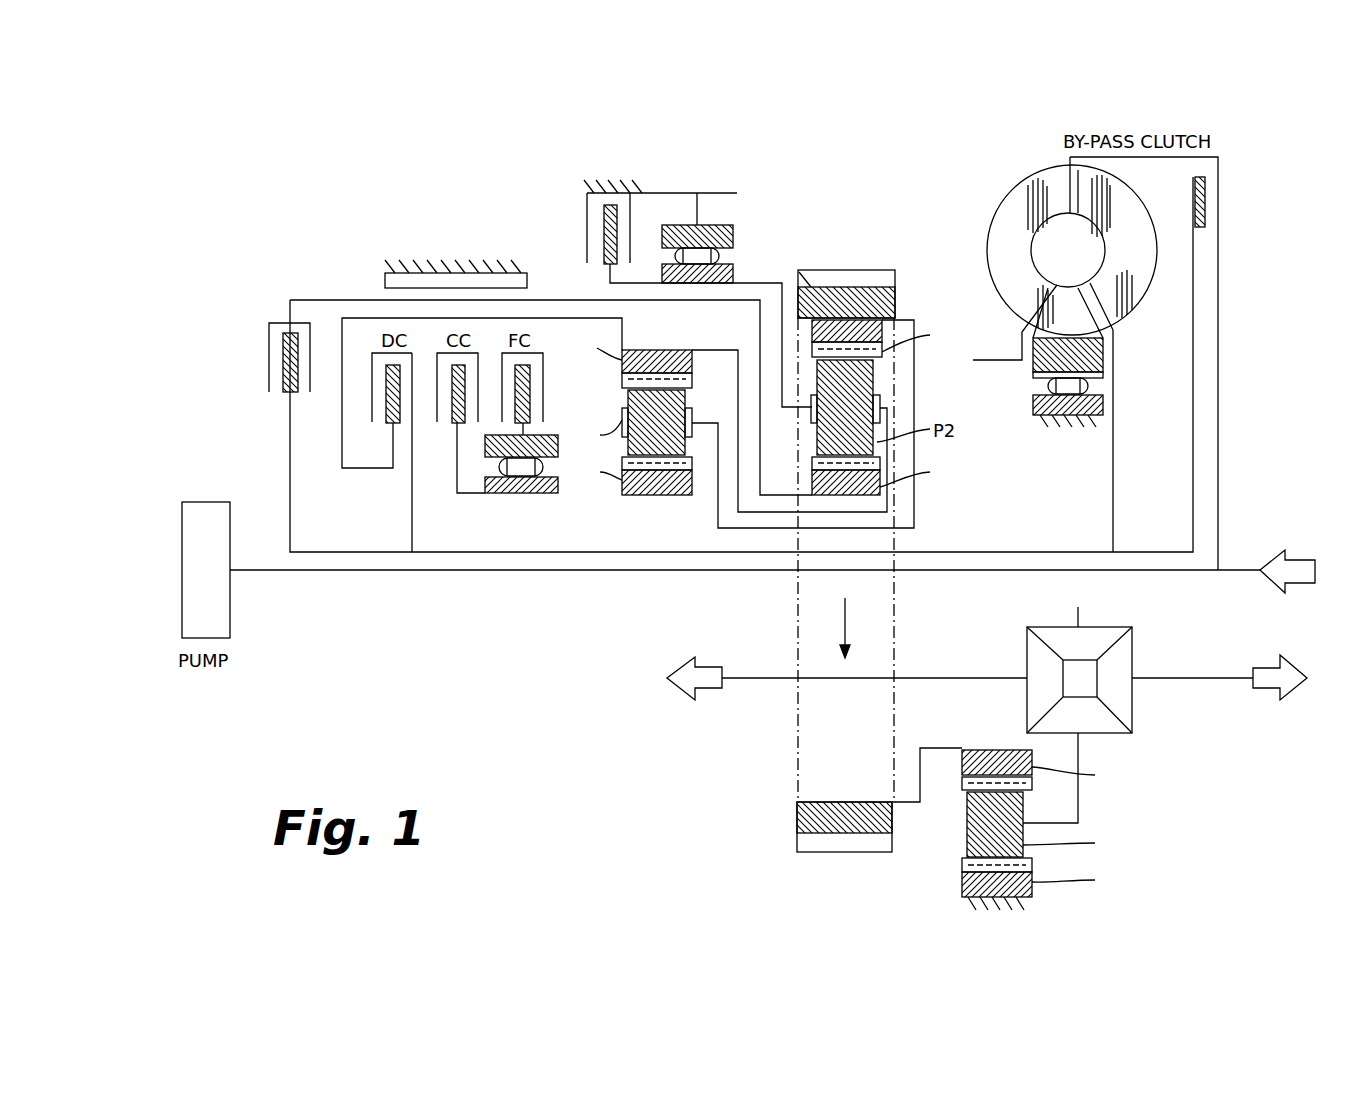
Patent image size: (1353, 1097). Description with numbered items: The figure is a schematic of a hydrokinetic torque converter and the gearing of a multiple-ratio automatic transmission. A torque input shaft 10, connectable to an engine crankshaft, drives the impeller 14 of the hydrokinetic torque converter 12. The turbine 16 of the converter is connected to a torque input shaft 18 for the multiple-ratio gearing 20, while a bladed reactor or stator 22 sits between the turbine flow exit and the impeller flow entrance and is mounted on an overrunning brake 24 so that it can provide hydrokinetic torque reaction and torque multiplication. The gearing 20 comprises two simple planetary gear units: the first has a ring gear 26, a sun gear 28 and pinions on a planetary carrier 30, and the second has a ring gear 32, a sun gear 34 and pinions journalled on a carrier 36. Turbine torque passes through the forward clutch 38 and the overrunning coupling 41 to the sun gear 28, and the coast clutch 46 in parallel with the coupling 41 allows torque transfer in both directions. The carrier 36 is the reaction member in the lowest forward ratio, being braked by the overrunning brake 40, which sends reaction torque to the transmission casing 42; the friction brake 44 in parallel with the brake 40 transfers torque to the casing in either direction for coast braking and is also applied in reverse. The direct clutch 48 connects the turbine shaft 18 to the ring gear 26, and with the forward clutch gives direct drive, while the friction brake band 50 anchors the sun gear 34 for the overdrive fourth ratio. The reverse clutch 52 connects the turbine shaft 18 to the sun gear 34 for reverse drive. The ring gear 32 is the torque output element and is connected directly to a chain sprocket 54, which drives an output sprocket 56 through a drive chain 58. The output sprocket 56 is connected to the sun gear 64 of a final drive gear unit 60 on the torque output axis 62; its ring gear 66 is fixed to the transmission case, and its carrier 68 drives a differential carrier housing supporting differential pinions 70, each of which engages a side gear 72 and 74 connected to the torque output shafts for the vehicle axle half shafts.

The torque input shaft 10 is at (1230, 568).
The hydrokinetic torque converter 12 is at (996, 212).
The impeller 14 is at (1020, 197).
The turbine 16 is at (1133, 217).
The torque input shaft 18 is at (978, 552).
The multiple-ratio gearing 20 is at (657, 496).
The bladed reactor or stator 22 is at (1037, 380).
The overrunning brake 24 is at (1057, 422).
The ring gear 26 is at (684, 350).
The sun gear 28 is at (633, 496).
The planetary carrier 30 is at (700, 423).
The ring gear 32 is at (863, 325).
The sun gear 34 is at (840, 496).
The carrier 36 is at (784, 409).
The forward clutch 38 is at (530, 368).
The overrunning brake 40 is at (703, 252).
The overrunning coupling 41 is at (487, 494).
The transmission casing 42 is at (648, 193).
The friction brake 44 is at (604, 213).
The coast clutch 46 is at (452, 370).
The direct clutch 48 is at (386, 383).
The friction brake band 50 is at (512, 272).
The reverse clutch 52 is at (284, 336).
The chain sprocket 54 is at (810, 285).
The output sprocket 56 is at (993, 898).
The drive chain 58 is at (795, 732).
The final drive gear unit 60 is at (967, 838).
The torque output axis 62 is at (940, 677).
The sun gear 64 is at (1032, 753).
The ring gear 66 is at (852, 817).
The carrier 68 is at (1047, 822).
The differential pinions 70 is at (1103, 626).
The side gear 72 is at (1133, 667).
The side gear 74 is at (1027, 650).